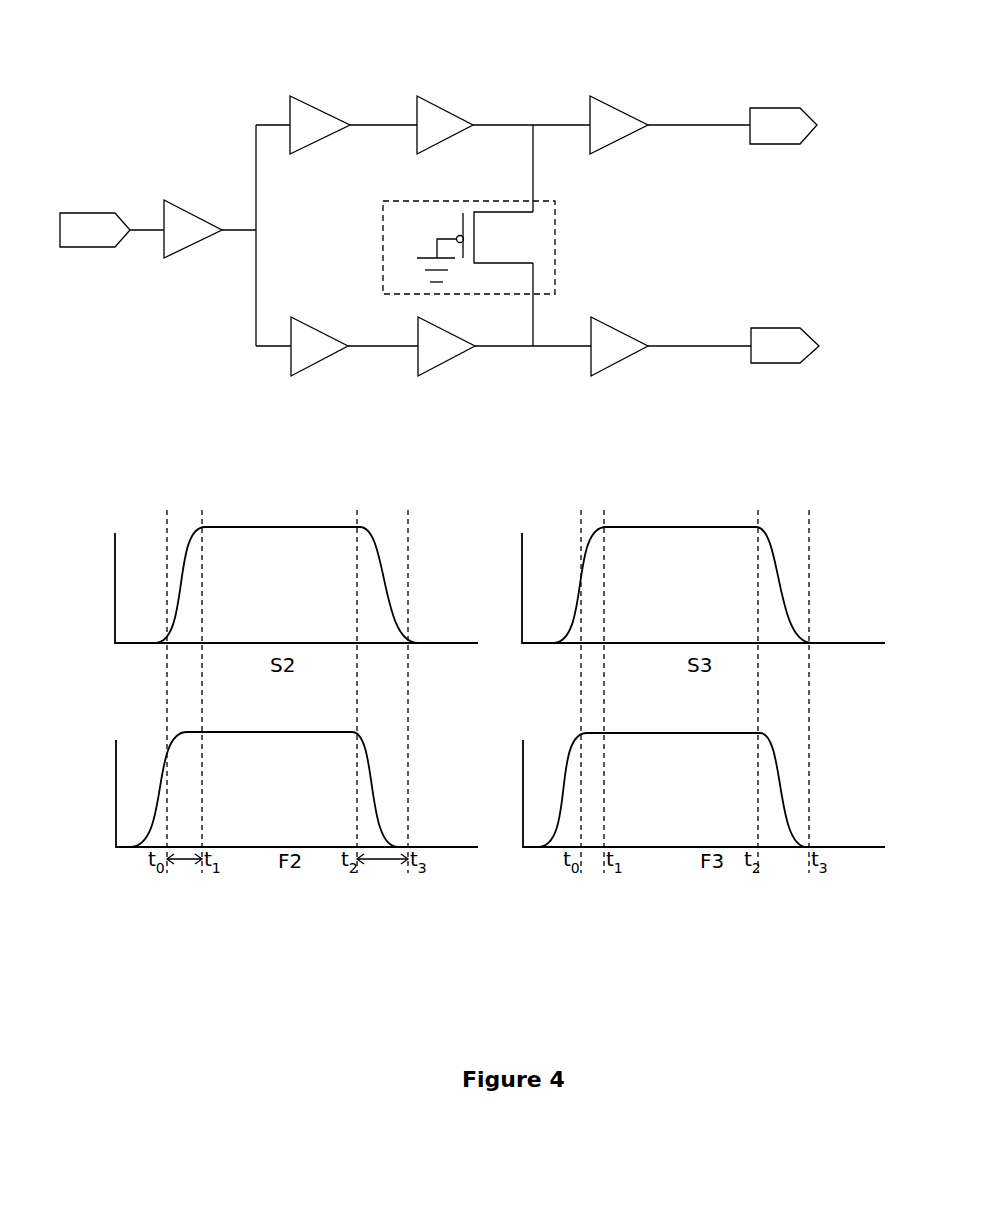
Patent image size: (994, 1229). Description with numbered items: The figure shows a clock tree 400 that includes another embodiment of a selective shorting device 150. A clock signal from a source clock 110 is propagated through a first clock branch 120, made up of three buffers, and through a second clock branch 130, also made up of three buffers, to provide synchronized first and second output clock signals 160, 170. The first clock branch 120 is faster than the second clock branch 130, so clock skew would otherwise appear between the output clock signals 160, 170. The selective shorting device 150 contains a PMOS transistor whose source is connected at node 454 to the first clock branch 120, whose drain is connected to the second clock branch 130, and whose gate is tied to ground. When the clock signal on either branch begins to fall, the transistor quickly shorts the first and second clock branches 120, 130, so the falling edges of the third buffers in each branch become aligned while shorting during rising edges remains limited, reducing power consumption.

The clock tree 400 is at (533, 60).
The source clock 110 is at (87, 248).
The first clock branch 120 is at (385, 93).
The second clock branch 130 is at (396, 368).
The selective shorting device 150 is at (556, 247).
The first output clock signal 160 is at (775, 145).
The second output clock signal 170 is at (775, 364).
The source node connection 454 is at (521, 210).